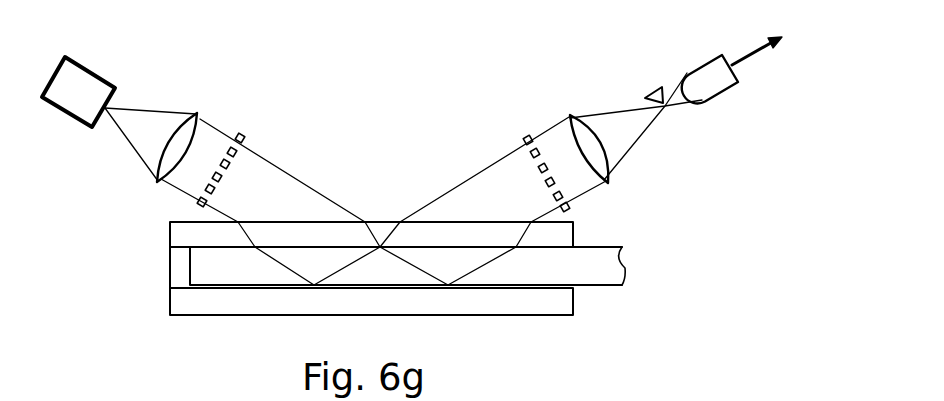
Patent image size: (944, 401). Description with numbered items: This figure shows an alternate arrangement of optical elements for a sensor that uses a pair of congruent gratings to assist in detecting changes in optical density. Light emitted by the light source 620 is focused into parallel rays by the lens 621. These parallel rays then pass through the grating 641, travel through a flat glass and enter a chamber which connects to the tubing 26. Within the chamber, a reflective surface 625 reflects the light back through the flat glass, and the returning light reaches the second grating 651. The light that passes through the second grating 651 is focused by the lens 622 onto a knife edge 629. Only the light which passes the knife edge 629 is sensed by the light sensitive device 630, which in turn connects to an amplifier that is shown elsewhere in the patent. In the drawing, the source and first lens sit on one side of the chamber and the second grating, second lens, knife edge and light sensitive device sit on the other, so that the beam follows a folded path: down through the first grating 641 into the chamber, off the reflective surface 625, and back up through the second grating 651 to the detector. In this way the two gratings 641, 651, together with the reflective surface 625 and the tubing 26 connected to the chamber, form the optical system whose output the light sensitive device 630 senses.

The light source 620 is at (100, 78).
The lens 621 is at (198, 113).
The grating 641 is at (244, 135).
The second grating 651 is at (523, 138).
The lens 622 is at (567, 113).
The knife edge 629 is at (648, 95).
The light sensitive device 630 is at (718, 97).
The tubing 26 is at (623, 272).
The reflective surface 625 is at (556, 281).